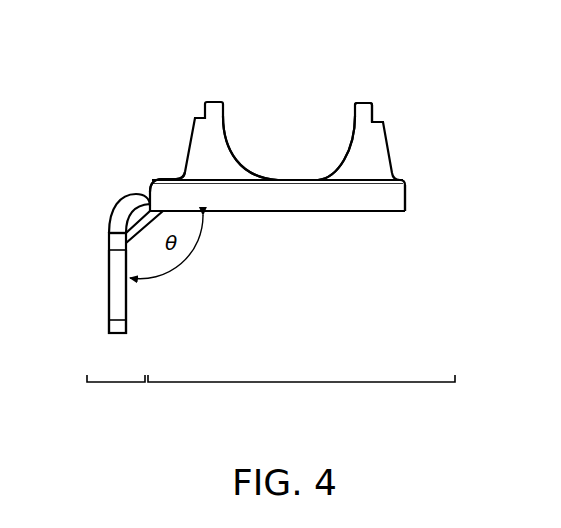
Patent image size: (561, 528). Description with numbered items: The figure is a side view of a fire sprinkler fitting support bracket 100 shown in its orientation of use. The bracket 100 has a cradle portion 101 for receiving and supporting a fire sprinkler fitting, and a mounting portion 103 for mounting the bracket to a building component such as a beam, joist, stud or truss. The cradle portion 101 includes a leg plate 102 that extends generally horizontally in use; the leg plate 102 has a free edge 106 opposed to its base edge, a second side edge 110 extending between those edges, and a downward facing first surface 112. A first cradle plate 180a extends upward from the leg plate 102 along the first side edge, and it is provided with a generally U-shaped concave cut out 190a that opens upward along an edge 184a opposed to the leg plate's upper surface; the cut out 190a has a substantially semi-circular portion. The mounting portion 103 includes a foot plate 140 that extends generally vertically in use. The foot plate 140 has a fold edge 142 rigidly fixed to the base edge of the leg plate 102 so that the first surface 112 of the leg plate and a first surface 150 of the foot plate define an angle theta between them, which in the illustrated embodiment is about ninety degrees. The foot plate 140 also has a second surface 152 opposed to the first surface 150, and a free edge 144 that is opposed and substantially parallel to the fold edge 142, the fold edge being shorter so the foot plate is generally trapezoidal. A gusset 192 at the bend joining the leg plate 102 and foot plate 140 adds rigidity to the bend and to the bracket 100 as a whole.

The fire sprinkler fitting support bracket 100 is at (108, 62).
The cradle portion 101 is at (300, 383).
The leg plate 102 is at (369, 198).
The mounting portion 103 is at (110, 383).
The free edge 106 is at (406, 196).
The second side edge 110 is at (130, 213).
The first surface 112 is at (285, 212).
The foot plate 140 is at (118, 263).
The fold edge 142 is at (113, 230).
The free edge 144 is at (117, 334).
The first surface 150 is at (125, 307).
The second surface 152 is at (108, 300).
The first cradle plate 180a is at (381, 157).
The edge 184a is at (364, 100).
The concave cut out 190a is at (231, 143).
The gusset 192 is at (122, 218).